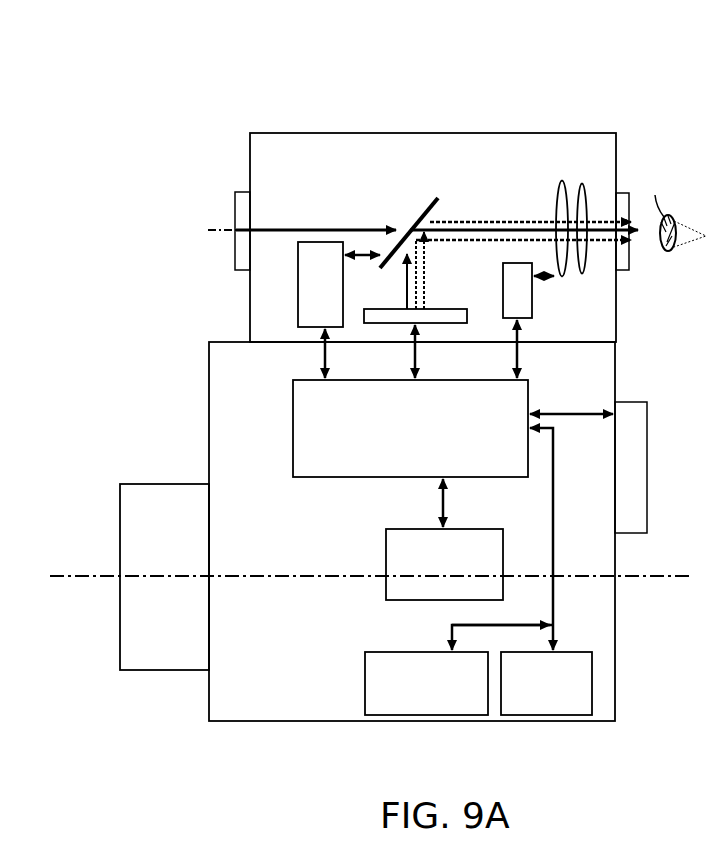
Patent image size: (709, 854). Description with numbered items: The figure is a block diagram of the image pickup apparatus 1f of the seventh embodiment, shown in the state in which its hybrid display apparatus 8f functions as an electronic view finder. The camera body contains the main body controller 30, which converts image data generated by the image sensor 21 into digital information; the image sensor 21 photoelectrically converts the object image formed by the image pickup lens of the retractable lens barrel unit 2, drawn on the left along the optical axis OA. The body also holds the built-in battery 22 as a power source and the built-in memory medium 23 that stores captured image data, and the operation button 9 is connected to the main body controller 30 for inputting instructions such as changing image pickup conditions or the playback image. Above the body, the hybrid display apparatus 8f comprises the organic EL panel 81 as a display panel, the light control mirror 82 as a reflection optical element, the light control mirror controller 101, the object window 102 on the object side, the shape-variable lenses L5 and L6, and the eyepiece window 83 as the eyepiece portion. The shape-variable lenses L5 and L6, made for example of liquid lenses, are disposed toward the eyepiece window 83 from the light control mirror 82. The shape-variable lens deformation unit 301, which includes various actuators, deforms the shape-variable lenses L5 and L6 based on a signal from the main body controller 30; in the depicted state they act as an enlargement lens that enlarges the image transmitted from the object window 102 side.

The image pickup apparatus 1f is at (706, 66).
The hybrid display apparatus 8f is at (428, 133).
The light control mirror 82 is at (432, 205).
The shape-variable lens deformation unit 301 is at (517, 263).
The shape-variable lens L5 is at (562, 185).
The shape-variable lens L6 is at (583, 185).
The eyepiece window 83 is at (622, 193).
The object window 102 is at (240, 261).
The light control mirror controller 101 is at (298, 298).
The organic EL panel 81 is at (440, 323).
The operation button 9 is at (647, 480).
The main body controller 30 is at (453, 453).
The image sensor 21 is at (386, 598).
The battery 22 is at (570, 718).
The memory medium 23 is at (475, 718).
The lens barrel unit 2 is at (137, 649).
The optical axis OA is at (80, 578).